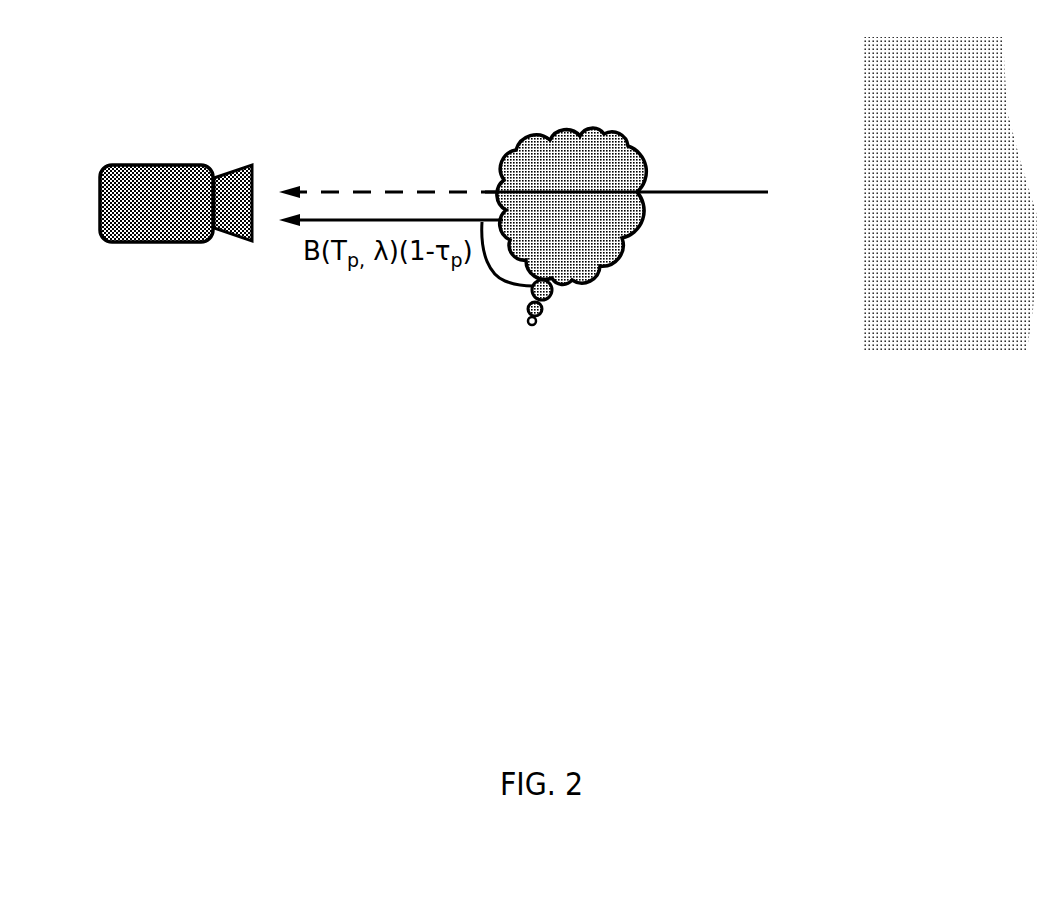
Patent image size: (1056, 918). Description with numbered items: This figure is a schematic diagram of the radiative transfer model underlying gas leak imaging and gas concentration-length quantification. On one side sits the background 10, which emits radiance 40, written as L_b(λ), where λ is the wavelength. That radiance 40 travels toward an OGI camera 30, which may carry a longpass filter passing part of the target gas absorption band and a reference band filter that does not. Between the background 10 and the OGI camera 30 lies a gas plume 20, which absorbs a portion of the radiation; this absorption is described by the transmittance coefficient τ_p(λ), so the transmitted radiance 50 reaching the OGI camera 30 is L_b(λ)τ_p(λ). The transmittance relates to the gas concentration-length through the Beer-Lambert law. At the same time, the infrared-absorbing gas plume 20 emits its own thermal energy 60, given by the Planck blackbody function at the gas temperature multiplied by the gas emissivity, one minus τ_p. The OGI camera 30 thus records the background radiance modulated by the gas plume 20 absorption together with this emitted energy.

The background 10 is at (918, 222).
The gas plume 20 is at (585, 150).
The OGI camera 30 is at (148, 183).
The radiance 40 is at (735, 187).
The transmitted radiance 50 is at (465, 190).
The thermal energy 60 is at (540, 303).